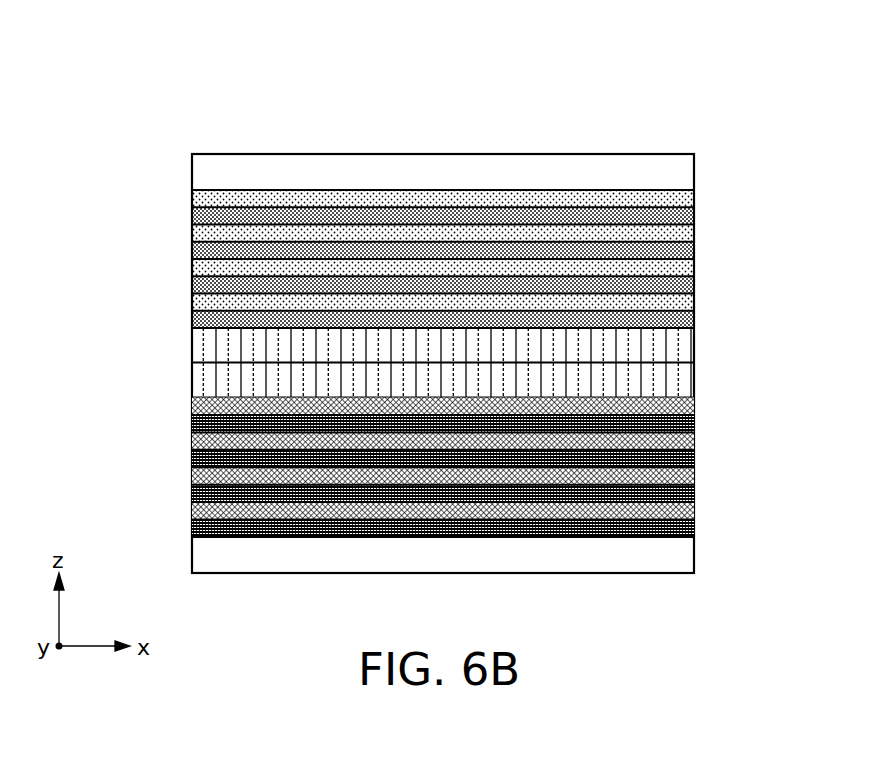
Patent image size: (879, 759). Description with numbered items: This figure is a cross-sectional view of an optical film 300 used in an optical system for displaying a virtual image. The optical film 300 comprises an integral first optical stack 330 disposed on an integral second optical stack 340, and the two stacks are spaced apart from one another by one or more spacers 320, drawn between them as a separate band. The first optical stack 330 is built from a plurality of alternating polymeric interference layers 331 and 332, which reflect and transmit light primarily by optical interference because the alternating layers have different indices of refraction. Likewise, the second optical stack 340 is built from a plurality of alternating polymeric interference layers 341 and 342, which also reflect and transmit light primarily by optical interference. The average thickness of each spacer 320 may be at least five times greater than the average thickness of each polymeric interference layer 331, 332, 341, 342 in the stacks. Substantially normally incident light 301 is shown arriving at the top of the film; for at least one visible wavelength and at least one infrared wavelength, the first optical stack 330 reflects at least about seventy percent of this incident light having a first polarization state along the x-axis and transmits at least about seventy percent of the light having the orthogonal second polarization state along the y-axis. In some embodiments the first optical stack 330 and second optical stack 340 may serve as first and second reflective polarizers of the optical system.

The optical film 300 is at (148, 118).
The substantially normally incident light 301 is at (445, 143).
The spacer 320 is at (688, 349).
The integral first optical stack 330 is at (178, 190).
The polymeric interference layer 331 is at (688, 199).
The polymeric interference layer 332 is at (688, 283).
The integral second optical stack 340 is at (180, 398).
The polymeric interference layer 341 is at (688, 496).
The polymeric interference layer 342 is at (688, 443).